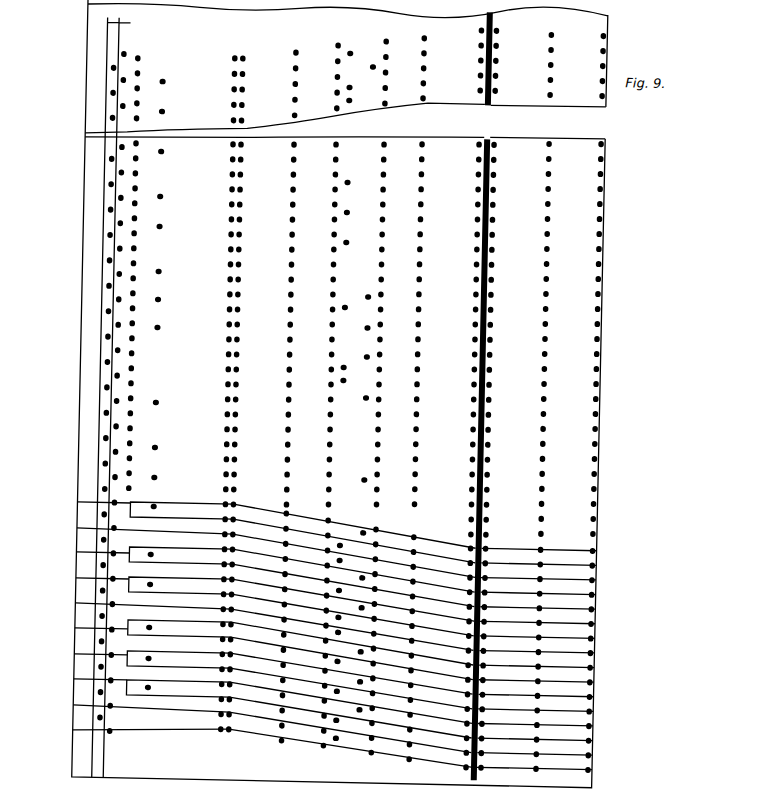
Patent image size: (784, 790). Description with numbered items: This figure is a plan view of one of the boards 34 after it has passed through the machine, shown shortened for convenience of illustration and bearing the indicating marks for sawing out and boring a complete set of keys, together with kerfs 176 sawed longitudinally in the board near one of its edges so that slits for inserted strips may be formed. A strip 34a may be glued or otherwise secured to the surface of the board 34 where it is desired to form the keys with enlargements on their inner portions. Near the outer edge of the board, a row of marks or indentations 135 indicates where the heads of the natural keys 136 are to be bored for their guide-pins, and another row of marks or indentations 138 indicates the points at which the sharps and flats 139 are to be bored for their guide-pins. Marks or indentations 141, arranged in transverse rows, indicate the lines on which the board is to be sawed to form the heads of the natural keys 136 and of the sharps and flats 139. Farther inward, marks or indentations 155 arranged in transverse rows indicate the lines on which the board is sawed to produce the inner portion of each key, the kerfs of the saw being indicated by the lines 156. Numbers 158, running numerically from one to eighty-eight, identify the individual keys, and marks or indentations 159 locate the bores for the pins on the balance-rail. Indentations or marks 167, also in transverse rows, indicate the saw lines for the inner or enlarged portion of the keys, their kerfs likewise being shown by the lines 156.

The board 34 is at (88, 750).
The strip 34a is at (600, 144).
The marks or indentations 135 is at (111, 537).
The natural keys 136 is at (92, 712).
The marks or indentations 138 is at (164, 505).
The sharps and flats 139 is at (167, 686).
The marks or indentations 141 is at (236, 470).
The marks or indentations 155 is at (485, 762).
The lines 156 is at (590, 685).
The numbers 158 is at (236, 712).
The marks or indentations 159 is at (374, 706).
The indentations or marks 167 is at (604, 760).
The kerfs 176 is at (117, 422).